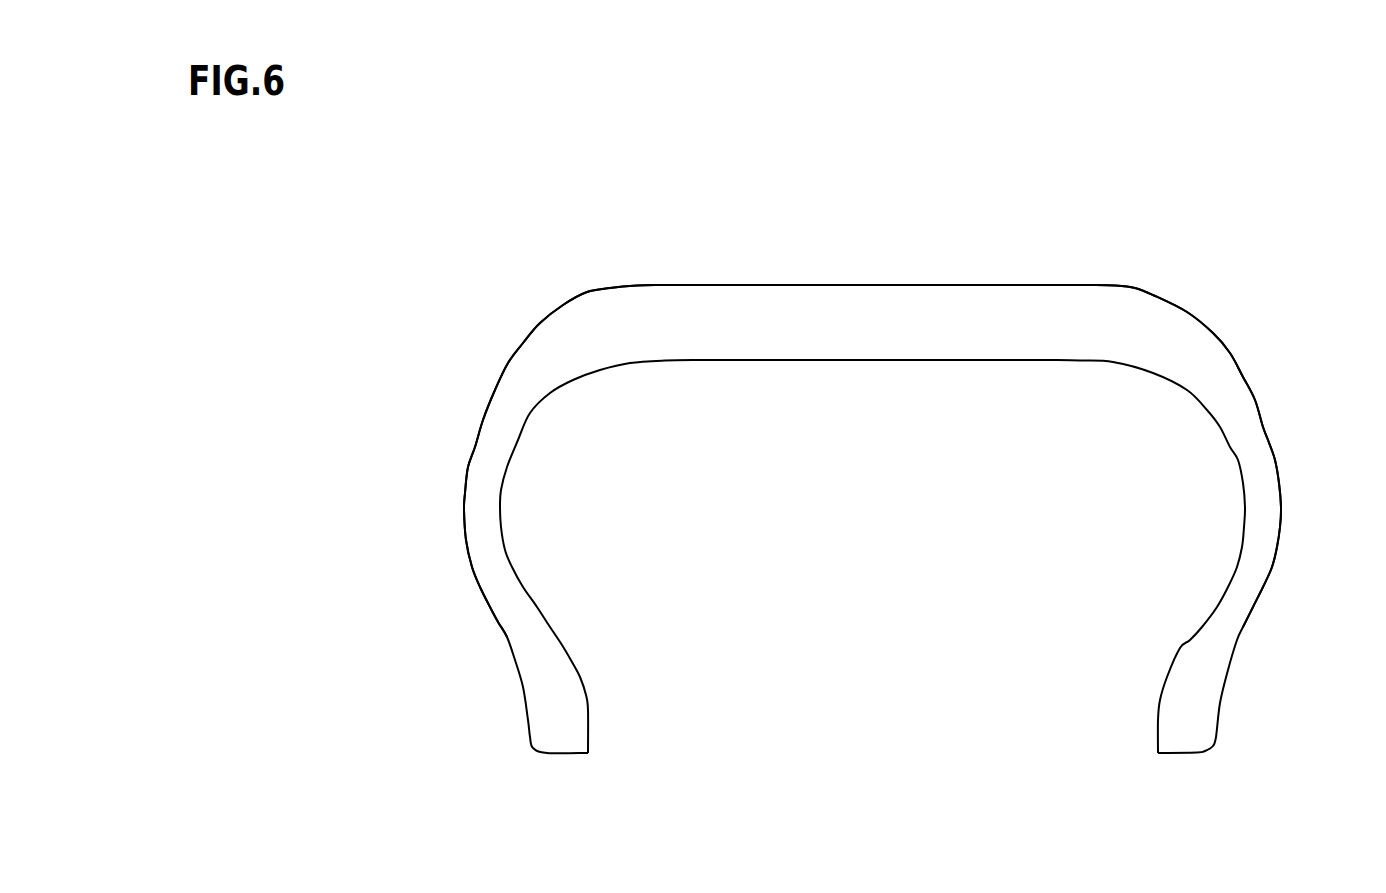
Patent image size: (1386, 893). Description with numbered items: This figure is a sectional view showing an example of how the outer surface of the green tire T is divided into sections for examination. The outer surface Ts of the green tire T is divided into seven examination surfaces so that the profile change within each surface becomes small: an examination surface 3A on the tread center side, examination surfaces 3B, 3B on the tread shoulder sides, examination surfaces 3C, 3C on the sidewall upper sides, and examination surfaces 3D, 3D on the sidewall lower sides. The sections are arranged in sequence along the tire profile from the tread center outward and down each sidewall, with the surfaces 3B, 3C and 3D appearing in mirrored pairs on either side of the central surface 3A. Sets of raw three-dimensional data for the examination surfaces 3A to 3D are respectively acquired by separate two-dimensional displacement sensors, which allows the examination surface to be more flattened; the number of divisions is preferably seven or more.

The green tire T is at (920, 285).
The examination surface on tread center side 3A is at (787, 274).
The examination surfaces on tread shoulder sides 3B is at (593, 274).
The examination surfaces on sidewall upper sides 3C is at (589, 290).
The examination surfaces on sidewall lower sides 3D is at (462, 441).